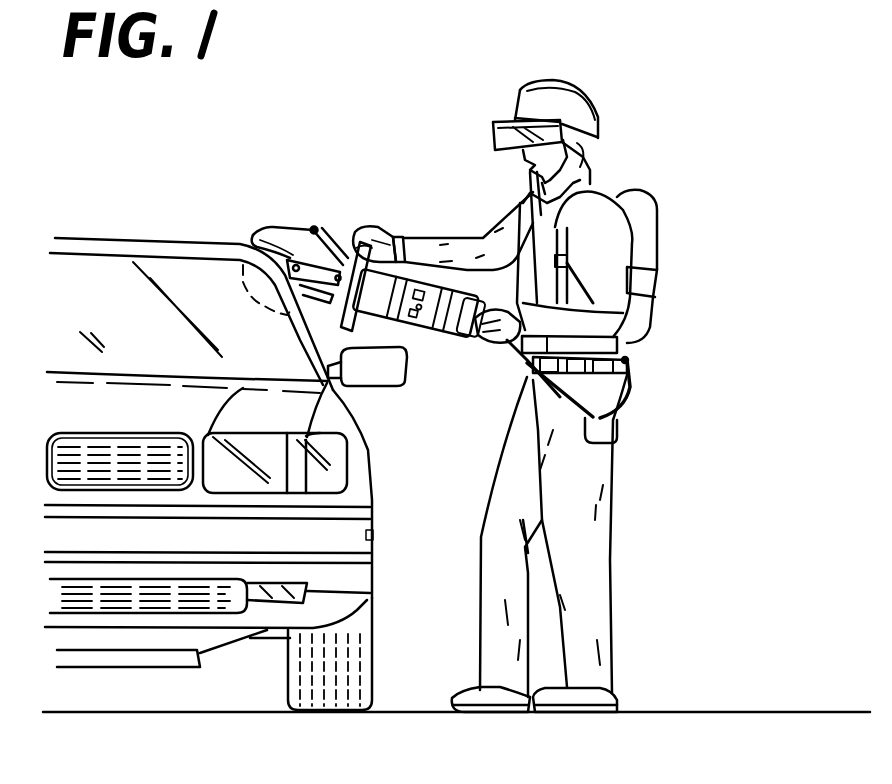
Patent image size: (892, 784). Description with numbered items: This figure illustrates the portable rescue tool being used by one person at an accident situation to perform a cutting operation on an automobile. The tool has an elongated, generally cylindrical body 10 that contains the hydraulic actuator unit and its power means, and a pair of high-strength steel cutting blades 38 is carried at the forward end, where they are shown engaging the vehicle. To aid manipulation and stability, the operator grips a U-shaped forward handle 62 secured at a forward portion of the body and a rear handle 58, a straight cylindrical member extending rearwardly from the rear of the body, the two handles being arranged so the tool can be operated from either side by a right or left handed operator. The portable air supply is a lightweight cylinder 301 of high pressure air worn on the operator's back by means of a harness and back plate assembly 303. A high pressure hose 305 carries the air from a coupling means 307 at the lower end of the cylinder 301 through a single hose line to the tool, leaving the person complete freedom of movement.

The tool body 10 is at (428, 339).
The cutting blades 38 is at (281, 229).
The U-shaped forward handle 62 is at (345, 262).
The rear handle 58 is at (516, 353).
The cylinder 301 is at (660, 213).
The harness and back plate assembly 303 is at (575, 207).
The high pressure hose 305 is at (607, 440).
The coupling means 307 is at (633, 360).